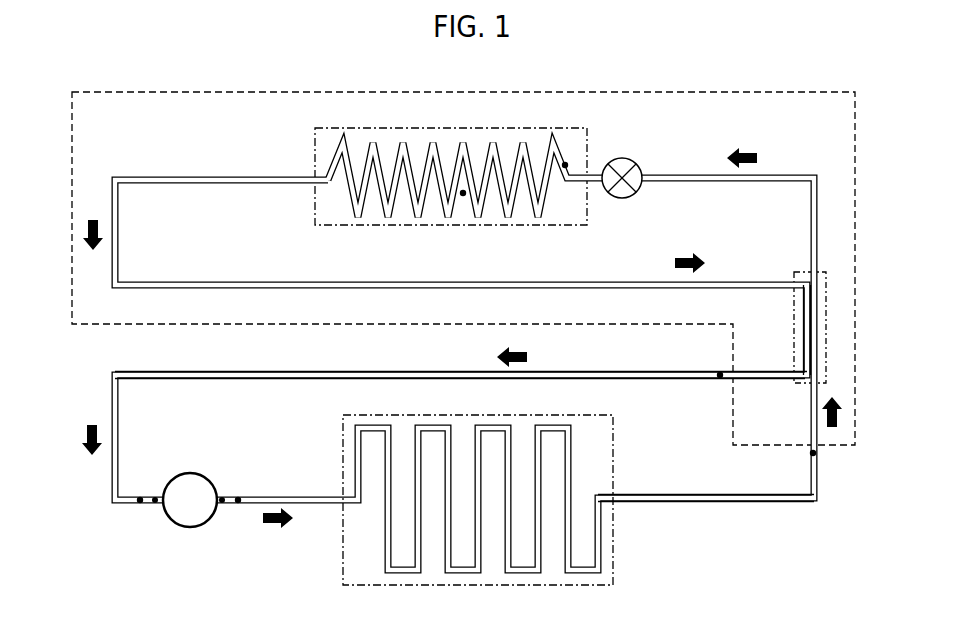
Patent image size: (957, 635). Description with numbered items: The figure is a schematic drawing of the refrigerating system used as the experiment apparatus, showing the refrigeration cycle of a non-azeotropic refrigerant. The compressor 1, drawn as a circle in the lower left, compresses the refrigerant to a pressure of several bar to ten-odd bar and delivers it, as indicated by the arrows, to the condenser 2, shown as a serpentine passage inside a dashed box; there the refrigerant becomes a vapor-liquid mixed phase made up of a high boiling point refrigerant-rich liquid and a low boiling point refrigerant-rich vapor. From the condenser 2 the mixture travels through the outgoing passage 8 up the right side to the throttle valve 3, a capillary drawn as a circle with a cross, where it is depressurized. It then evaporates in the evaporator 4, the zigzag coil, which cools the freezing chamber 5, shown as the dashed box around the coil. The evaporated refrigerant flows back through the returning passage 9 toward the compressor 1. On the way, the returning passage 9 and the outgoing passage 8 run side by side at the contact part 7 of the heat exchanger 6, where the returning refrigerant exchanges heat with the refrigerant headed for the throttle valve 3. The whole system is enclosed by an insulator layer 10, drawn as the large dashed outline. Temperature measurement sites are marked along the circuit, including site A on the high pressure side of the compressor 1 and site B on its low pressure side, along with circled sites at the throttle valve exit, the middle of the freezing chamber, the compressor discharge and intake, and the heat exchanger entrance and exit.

The compressor 1 is at (192, 474).
The condenser 2 is at (614, 455).
The throttle valve 3 is at (622, 158).
The evaporator 4 is at (515, 180).
The freezing chamber 5 is at (325, 227).
The heat exchanger 6 is at (793, 298).
The contact part of heat exchanger 7 is at (810, 338).
The outgoing passage 8 is at (663, 498).
The returning passage 9 is at (393, 375).
The insulator layer 10 is at (118, 325).
The temperature measurement site on high pressure side A is at (223, 502).
The temperature measurement site on low pressure side B is at (153, 502).